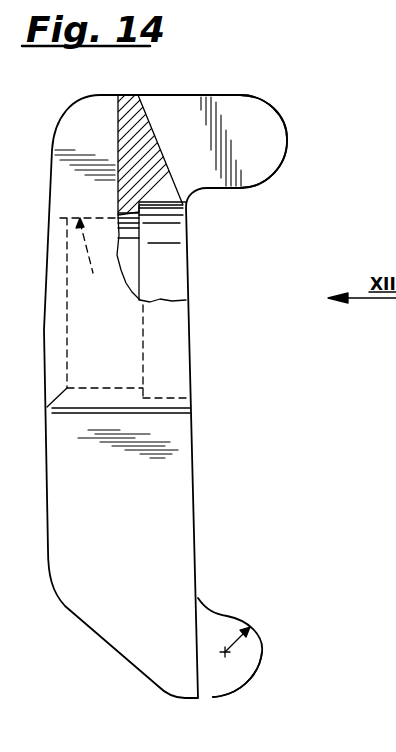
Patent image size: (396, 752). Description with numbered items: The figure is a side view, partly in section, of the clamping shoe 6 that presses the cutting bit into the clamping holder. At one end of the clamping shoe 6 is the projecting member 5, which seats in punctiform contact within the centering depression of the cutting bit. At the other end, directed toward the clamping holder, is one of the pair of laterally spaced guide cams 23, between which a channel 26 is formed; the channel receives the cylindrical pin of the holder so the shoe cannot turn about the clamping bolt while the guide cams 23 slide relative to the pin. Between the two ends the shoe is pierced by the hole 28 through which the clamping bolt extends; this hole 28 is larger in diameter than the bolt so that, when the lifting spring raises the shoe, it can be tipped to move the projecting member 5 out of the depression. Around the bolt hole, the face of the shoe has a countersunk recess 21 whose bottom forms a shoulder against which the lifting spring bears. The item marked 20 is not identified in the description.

The projecting member 5 is at (243, 672).
The clamping shoe 6 is at (218, 400).
The bore 20 is at (240, 644).
The countersunk recess 21 is at (172, 250).
The guide cam 23 is at (294, 129).
The channel 26 is at (160, 117).
The hole 28 is at (124, 308).